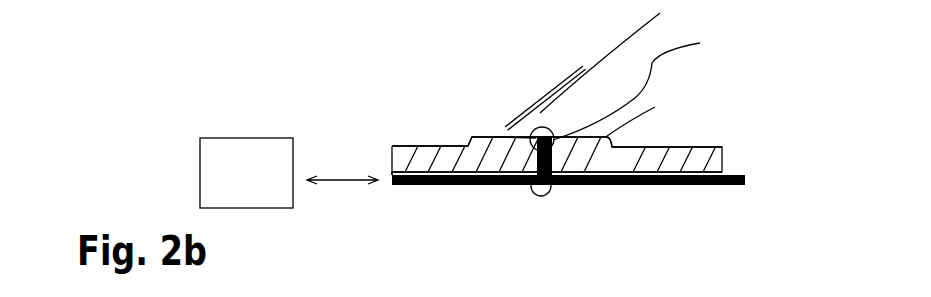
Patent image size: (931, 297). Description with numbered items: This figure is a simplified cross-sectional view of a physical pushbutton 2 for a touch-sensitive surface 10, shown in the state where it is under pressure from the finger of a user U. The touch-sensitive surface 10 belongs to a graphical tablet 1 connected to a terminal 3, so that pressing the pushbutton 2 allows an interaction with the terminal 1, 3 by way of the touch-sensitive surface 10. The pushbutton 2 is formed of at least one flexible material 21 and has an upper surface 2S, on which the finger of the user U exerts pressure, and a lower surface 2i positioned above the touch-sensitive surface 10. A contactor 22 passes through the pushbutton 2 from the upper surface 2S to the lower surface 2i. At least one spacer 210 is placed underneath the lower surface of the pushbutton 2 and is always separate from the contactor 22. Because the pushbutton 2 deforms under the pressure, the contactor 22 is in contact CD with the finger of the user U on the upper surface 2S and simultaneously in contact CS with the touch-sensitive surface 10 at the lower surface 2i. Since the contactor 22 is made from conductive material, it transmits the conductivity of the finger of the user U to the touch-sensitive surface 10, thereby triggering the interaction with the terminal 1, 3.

The graphical tablet 1 is at (246, 173).
The terminal 3 is at (246, 173).
The pushbutton 2 is at (736, 123).
The upper surface 2S is at (450, 135).
The lower surface 2i is at (384, 162).
The flexible material 21 is at (471, 133).
The contactor 22 is at (526, 140).
The spacer 210 is at (397, 192).
The touch-sensitive surface 10 is at (687, 192).
The contact with the finger CD is at (534, 124).
The contact with the touch-sensitive surface CS is at (553, 197).
The user U is at (647, 67).